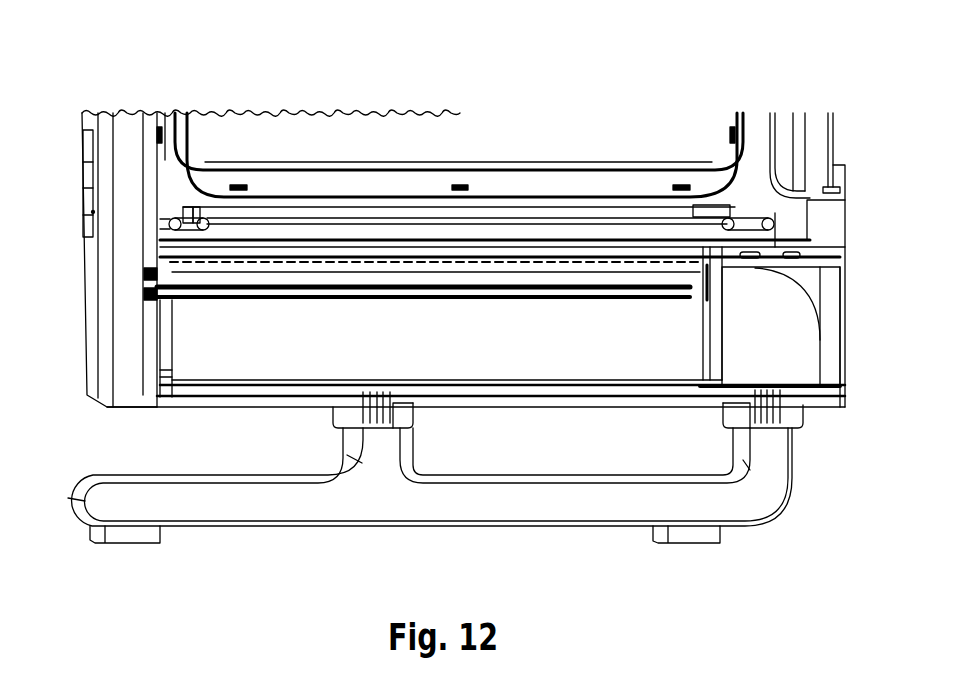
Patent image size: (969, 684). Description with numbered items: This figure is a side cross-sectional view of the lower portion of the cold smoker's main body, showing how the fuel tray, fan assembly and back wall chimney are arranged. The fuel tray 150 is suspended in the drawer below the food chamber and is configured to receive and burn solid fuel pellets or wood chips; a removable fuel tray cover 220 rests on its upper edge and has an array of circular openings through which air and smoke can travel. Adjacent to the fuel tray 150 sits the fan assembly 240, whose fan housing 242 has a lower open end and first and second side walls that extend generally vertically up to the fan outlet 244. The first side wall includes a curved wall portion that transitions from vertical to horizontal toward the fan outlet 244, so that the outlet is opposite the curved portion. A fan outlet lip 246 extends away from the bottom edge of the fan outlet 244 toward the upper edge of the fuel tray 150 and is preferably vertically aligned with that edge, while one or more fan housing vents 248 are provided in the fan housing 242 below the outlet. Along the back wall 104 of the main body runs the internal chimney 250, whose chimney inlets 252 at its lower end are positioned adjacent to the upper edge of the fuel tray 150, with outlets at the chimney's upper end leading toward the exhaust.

The back wall 104 is at (95, 297).
The fuel tray 150 is at (471, 347).
The fuel tray cover 220 is at (493, 255).
The fan assembly 240 is at (822, 392).
The fan housing 242 is at (776, 345).
The fan outlet 244 is at (707, 253).
The fan outlet lip 246 is at (689, 296).
The fan housing vents 248 is at (699, 310).
The internal chimney 250 is at (150, 127).
The chimney inlets 252 is at (148, 303).